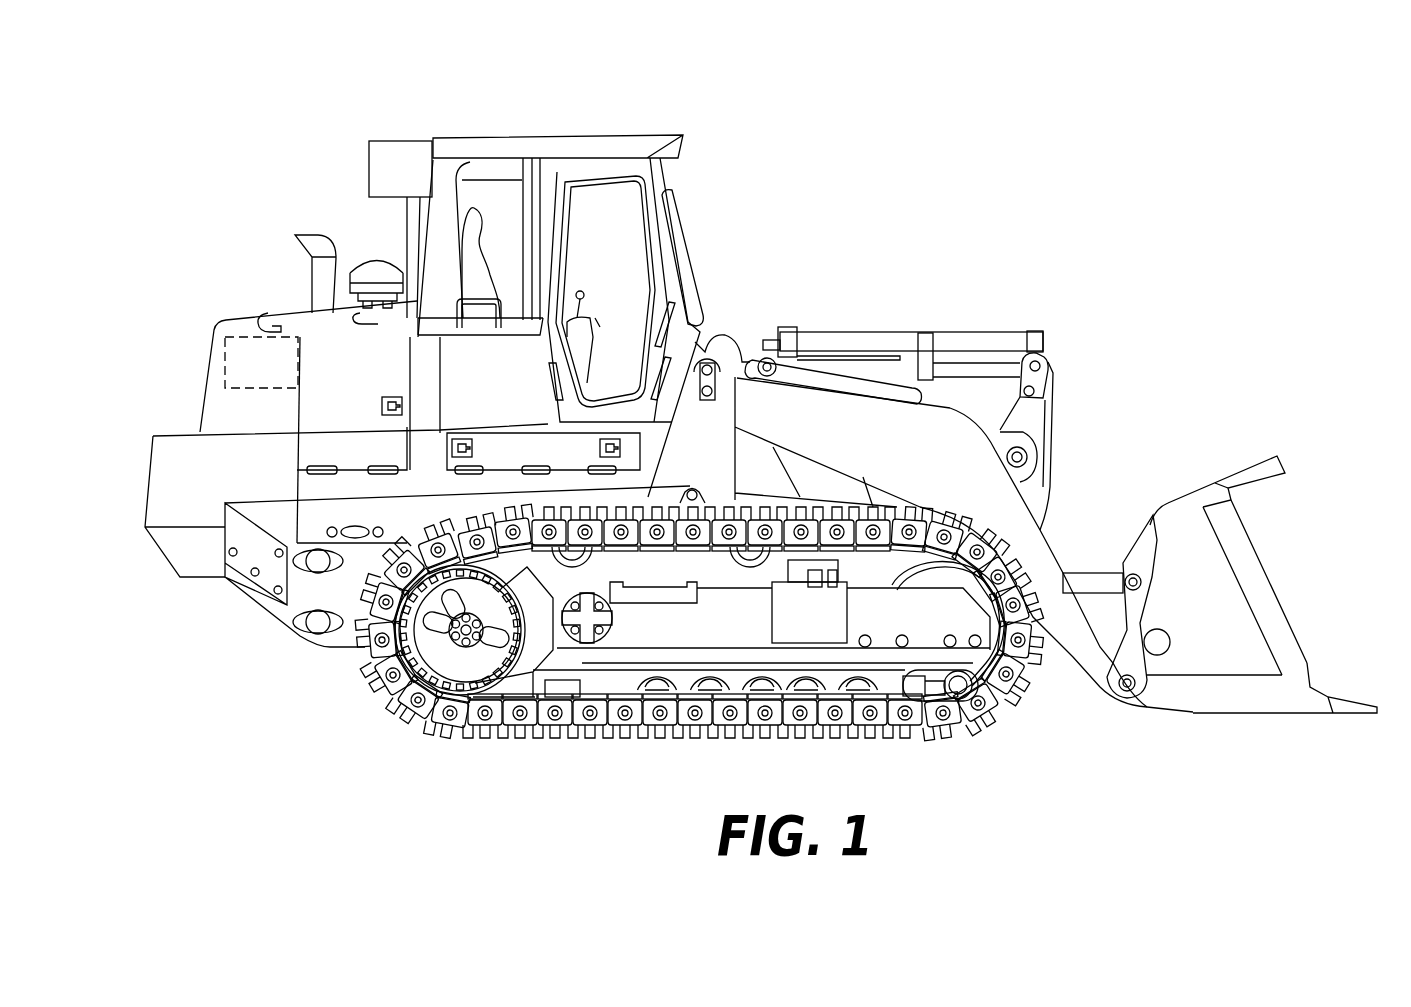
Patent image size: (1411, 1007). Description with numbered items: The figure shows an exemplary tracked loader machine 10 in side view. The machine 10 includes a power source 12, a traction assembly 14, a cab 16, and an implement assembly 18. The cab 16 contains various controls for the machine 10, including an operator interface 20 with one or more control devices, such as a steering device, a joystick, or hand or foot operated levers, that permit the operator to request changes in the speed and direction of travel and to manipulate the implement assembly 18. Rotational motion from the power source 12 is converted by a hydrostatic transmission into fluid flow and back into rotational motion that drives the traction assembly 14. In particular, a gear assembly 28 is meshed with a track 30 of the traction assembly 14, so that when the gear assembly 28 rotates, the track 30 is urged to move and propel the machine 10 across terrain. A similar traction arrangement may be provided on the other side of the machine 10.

The tracked loader machine 10 is at (1080, 153).
The power source 12 is at (246, 336).
The traction assembly 14 is at (664, 751).
The cab 16 is at (558, 152).
The implement assembly 18 is at (1211, 585).
The operator interface 20 is at (630, 331).
The gear assembly 28 is at (405, 712).
The track 30 is at (950, 728).